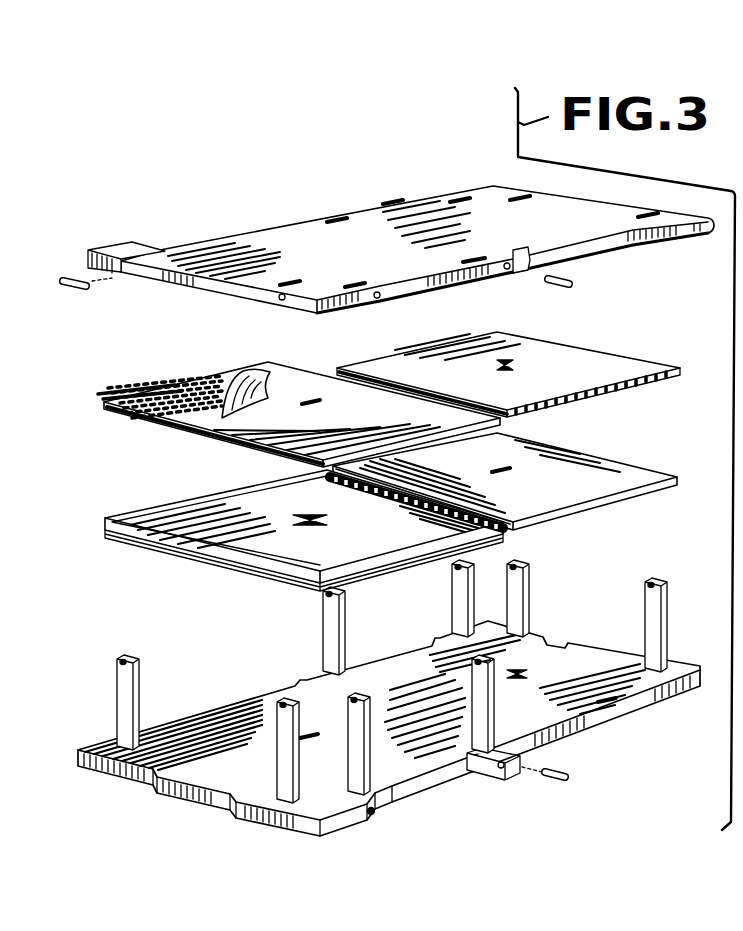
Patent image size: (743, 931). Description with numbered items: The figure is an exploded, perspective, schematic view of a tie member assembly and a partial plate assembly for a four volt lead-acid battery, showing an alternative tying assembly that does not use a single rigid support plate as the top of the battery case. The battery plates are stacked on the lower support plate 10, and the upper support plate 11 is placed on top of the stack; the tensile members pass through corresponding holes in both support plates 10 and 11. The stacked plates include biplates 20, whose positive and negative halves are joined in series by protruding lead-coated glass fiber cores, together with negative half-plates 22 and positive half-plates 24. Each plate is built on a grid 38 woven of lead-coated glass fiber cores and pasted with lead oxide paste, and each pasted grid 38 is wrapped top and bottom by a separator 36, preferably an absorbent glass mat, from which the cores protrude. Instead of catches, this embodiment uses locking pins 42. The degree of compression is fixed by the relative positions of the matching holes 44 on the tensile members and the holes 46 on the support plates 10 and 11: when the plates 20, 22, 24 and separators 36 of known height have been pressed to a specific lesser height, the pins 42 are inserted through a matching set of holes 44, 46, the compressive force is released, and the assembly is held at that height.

The support plate 10 is at (612, 703).
The support plate 11 is at (233, 241).
The biplate 20 is at (330, 474).
The negative half-plate 22 is at (289, 378).
The positive half-plate 24 is at (598, 367).
The separator 36 is at (187, 546).
The grid 38 is at (188, 382).
The locking pin 42 is at (76, 290).
The hole 44 is at (120, 669).
The hole 46 is at (376, 814).